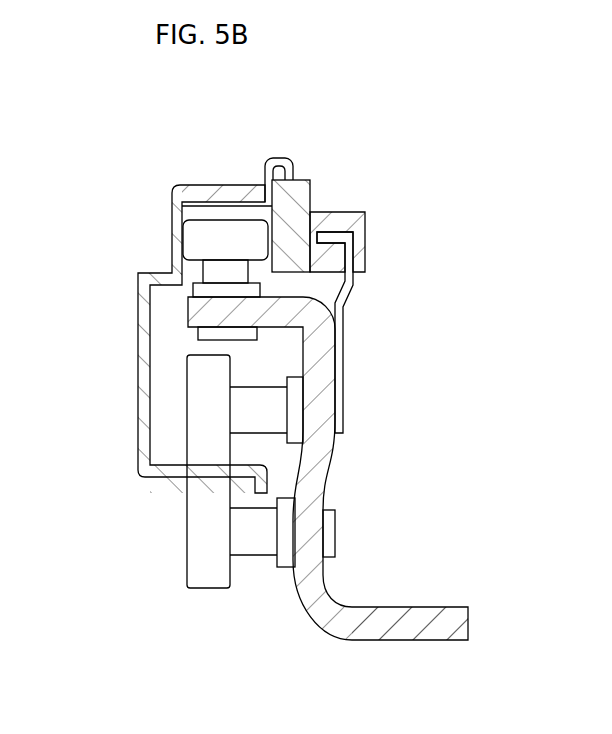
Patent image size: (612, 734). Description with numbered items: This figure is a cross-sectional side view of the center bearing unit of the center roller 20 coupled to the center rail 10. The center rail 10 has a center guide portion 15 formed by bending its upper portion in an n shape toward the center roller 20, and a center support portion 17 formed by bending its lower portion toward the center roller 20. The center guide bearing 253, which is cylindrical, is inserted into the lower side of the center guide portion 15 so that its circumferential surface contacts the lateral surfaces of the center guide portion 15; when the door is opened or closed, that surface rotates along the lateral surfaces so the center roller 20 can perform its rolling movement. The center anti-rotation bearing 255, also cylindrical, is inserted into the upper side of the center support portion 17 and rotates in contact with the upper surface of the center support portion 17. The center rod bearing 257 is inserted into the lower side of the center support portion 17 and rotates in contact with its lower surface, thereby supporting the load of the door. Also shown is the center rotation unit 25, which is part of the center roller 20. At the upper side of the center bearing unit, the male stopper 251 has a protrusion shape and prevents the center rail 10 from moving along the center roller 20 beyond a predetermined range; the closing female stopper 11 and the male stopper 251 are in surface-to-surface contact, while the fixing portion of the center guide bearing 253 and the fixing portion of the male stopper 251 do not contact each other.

The center rail 10 is at (146, 214).
The closing female stopper 11 is at (301, 190).
The center guide portion 15 is at (242, 184).
The center support portion 17 is at (205, 473).
The center roller 20 is at (375, 468).
The center rotation unit 25 is at (403, 607).
The male stopper 251 is at (333, 213).
The center guide bearing 253 is at (212, 236).
The center anti-rotation bearing 255 is at (200, 418).
The center rod bearing 257 is at (200, 562).